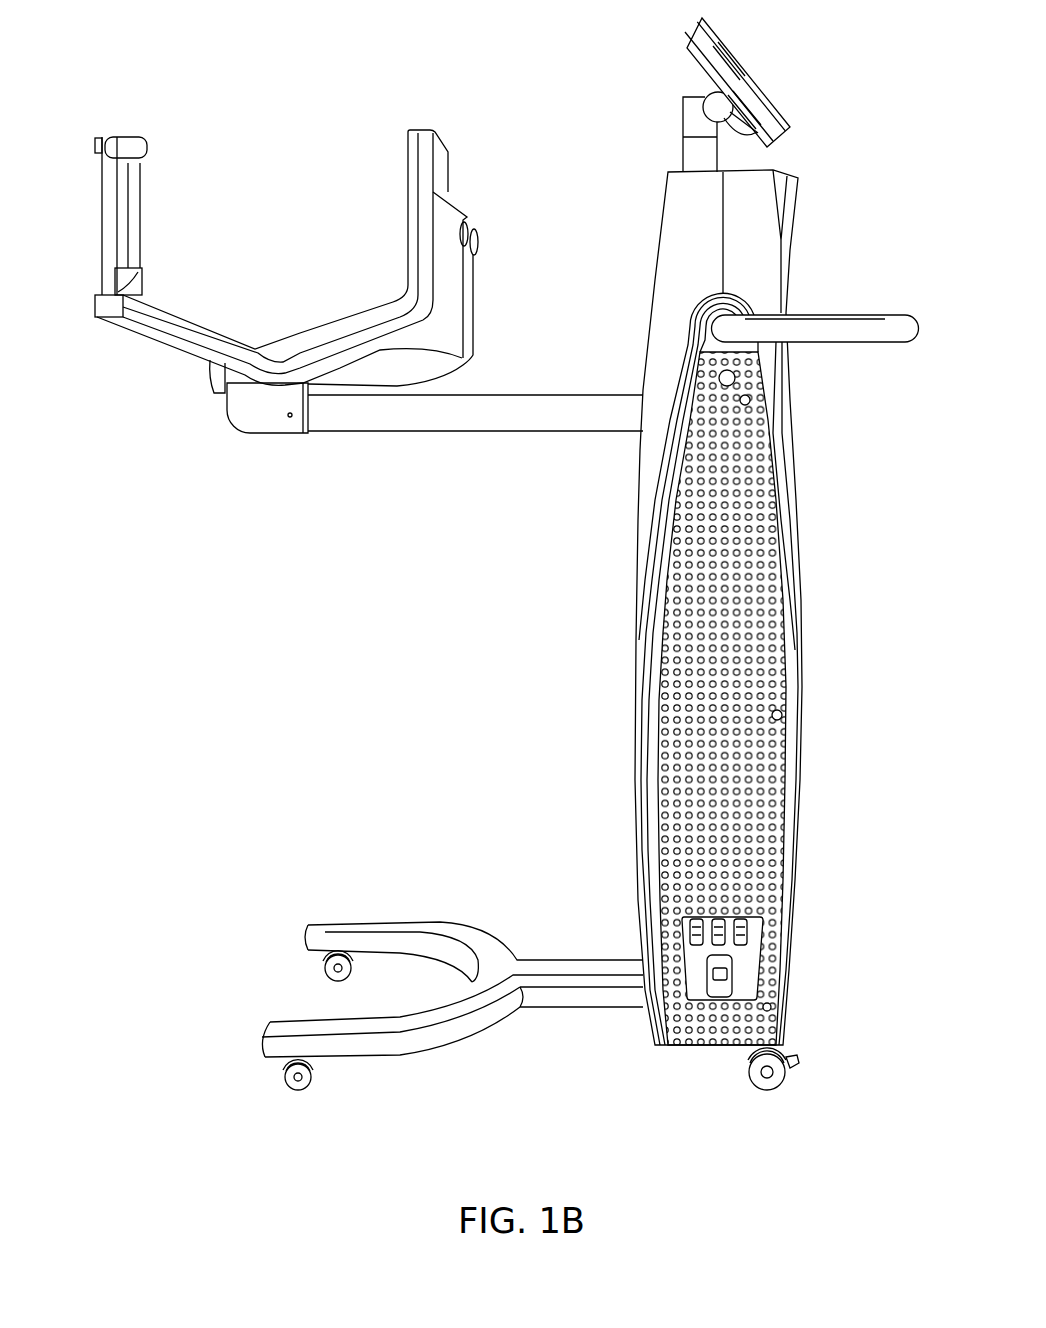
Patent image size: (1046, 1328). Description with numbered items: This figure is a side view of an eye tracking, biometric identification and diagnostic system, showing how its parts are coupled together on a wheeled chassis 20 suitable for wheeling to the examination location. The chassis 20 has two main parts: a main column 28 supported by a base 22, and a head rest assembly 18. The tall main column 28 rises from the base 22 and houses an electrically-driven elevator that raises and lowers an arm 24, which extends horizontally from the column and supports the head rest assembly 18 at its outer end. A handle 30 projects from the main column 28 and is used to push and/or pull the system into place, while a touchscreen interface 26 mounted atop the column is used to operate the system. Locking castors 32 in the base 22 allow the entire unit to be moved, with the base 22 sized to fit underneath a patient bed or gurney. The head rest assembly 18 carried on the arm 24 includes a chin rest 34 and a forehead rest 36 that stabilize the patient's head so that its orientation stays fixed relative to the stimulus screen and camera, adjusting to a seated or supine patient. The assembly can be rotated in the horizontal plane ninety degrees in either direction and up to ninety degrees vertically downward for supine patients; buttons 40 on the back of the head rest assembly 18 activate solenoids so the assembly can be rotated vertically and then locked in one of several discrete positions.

The head rest assembly 18 is at (150, 343).
The wheeled chassis 20 is at (633, 775).
The base 22 is at (467, 925).
The arm 24 is at (458, 432).
The touchscreen interface 26 is at (747, 72).
The main column 28 is at (805, 695).
The handle 30 is at (880, 344).
The locking castors 32 is at (323, 968).
The chin rest 34 is at (138, 270).
The forehead rest 36 is at (143, 148).
The buttons 40 is at (480, 242).